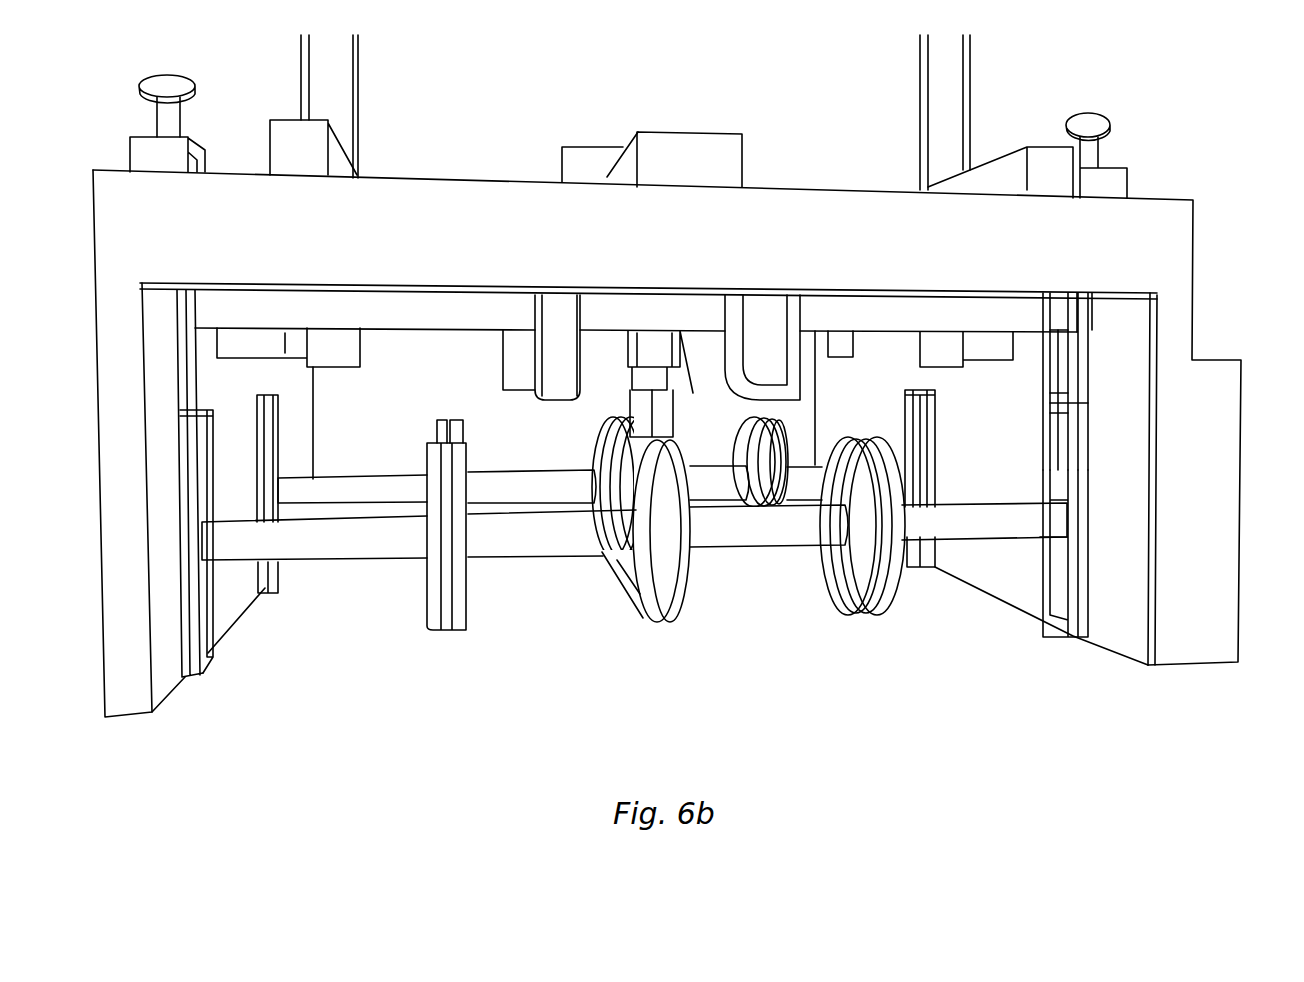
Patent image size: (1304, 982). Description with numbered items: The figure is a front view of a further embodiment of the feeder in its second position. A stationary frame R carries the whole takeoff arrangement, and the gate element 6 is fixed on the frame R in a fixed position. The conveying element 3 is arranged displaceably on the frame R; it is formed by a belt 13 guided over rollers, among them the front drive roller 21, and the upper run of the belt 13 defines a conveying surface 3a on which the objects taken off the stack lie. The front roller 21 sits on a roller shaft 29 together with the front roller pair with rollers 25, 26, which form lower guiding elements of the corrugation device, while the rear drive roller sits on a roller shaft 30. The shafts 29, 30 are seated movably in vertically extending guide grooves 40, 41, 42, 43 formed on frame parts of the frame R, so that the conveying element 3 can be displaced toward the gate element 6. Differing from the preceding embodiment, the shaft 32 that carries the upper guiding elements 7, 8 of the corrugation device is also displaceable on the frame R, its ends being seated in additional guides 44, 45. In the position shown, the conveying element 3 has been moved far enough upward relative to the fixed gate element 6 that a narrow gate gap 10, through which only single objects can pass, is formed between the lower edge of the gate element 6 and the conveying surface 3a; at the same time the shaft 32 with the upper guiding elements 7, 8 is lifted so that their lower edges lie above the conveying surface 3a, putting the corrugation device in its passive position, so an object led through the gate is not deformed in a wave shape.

The frame R is at (1217, 540).
The shaft 32 is at (648, 374).
The guide 45 is at (202, 410).
The guide groove 41 is at (205, 627).
The guide groove 43 is at (280, 437).
The roller shaft 30 is at (380, 493).
The roller 25 is at (427, 588).
The upper guiding element 8 is at (557, 347).
The upper guiding element 7 is at (768, 325).
The gate element 6 is at (643, 415).
The gate gap 10 is at (677, 432).
The conveying surface 3a is at (600, 407).
The roller 21 is at (627, 598).
The belt 13 is at (672, 598).
The conveying element 3 is at (605, 638).
The roller shaft 29 is at (878, 525).
The roller 26 is at (843, 575).
The guide groove 42 is at (915, 453).
The guide 44 is at (1073, 370).
The guide groove 40 is at (1062, 597).